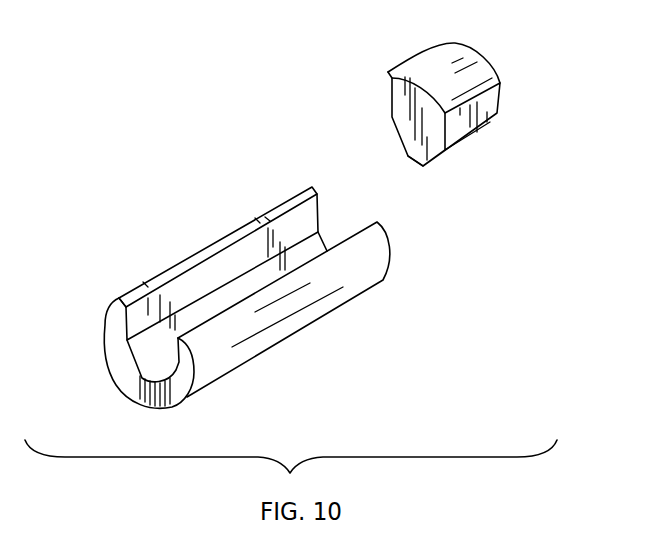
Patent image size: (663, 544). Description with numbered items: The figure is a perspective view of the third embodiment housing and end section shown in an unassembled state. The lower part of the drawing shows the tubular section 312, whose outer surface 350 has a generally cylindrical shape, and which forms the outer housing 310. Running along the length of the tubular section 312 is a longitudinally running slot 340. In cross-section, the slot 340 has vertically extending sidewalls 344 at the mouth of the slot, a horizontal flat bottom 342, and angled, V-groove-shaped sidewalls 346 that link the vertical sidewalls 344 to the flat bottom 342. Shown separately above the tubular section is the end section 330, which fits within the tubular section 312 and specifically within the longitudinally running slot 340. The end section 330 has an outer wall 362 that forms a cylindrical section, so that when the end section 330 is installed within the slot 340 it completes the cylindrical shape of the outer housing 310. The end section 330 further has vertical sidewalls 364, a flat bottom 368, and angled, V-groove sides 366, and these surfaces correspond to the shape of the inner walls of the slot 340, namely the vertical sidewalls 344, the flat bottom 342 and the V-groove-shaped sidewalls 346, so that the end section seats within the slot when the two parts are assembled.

The outer housing 310 is at (214, 295).
The tubular section 312 is at (148, 285).
The end section 330 is at (427, 102).
The longitudinally running slot 340 is at (210, 299).
The flat bottom 342 is at (142, 376).
The vertically extending sidewalls 344 is at (133, 322).
The V-groove-shaped sidewalls 346 is at (135, 353).
The outer surface 350 is at (338, 305).
The outer wall 362 is at (467, 60).
The vertical sidewalls 364 is at (388, 103).
The V-groove sides 366 is at (398, 137).
The flat bottom 368 is at (415, 160).